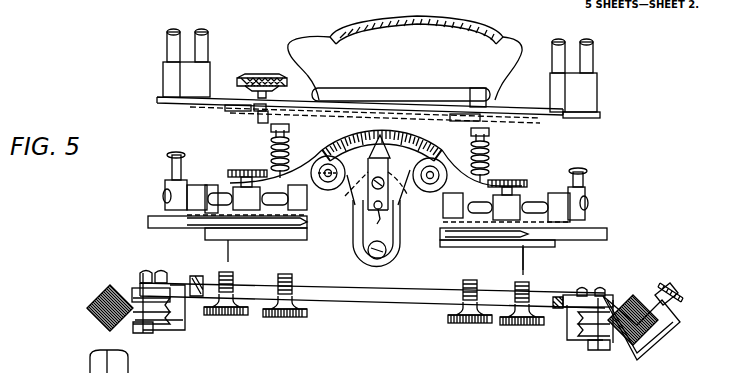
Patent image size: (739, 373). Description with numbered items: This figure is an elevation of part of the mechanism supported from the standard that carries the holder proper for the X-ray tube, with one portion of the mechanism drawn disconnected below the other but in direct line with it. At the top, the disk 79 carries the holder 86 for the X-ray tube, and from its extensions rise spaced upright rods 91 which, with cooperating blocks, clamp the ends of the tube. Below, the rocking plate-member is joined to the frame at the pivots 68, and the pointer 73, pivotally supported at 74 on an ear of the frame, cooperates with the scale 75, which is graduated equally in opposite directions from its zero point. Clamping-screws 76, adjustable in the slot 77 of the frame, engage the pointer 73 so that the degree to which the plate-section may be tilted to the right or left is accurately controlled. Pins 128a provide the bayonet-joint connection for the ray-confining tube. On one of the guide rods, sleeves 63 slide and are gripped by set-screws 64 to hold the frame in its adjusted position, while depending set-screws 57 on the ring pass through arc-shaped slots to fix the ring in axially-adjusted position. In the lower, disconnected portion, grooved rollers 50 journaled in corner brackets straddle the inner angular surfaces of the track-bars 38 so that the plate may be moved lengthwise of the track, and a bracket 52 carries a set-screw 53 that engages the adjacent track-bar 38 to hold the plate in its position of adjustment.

The upright rods 91 is at (200, 32).
The disk 79 is at (212, 104).
The holder 86 is at (447, 66).
The pointer 73 is at (389, 190).
The pivot 74 is at (385, 224).
The clamping-screws 76 is at (320, 176).
The scale 75 is at (434, 159).
The slot 77 is at (346, 235).
The pivots 68 is at (384, 257).
The pins 128a is at (504, 151).
The sleeves 63 is at (246, 196).
The set-screws 64 is at (251, 176).
The set-screws 57 is at (232, 318).
The track-bars 38 is at (104, 300).
The rollers 50 is at (160, 335).
The bracket 52 is at (660, 340).
The set-screw 53 is at (672, 290).